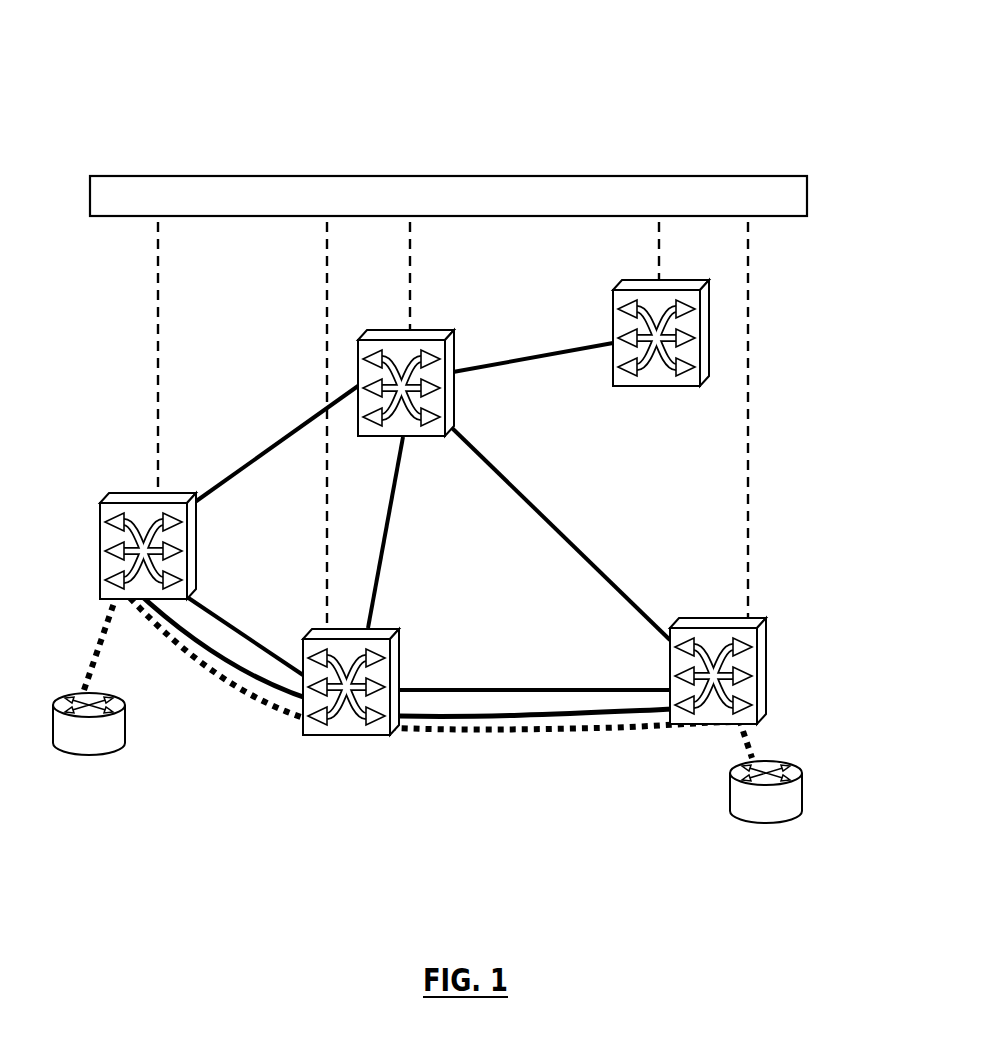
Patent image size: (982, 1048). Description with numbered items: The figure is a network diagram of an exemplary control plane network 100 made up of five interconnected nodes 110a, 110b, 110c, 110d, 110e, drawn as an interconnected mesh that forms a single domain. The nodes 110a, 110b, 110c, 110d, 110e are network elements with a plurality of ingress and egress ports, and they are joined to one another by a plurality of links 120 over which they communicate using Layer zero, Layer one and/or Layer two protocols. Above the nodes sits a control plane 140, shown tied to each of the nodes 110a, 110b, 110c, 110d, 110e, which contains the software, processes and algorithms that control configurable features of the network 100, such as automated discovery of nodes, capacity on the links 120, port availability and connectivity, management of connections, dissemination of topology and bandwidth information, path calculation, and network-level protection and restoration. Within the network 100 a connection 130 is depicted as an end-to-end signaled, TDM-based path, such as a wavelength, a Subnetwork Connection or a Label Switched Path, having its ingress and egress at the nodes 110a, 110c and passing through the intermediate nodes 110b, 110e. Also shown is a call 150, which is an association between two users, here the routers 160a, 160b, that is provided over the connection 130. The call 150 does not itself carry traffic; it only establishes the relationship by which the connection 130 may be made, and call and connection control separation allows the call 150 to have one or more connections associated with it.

The control plane network 100 is at (572, 47).
The control plane 140 is at (580, 176).
The links 120 is at (262, 452).
The connection 130 is at (427, 710).
The call 150 is at (470, 731).
The node 110a is at (100, 548).
The node 110b is at (440, 329).
The node 110c is at (670, 388).
The node 110d is at (717, 726).
The node 110e is at (303, 722).
The router 160a is at (90, 745).
The router 160b is at (755, 812).